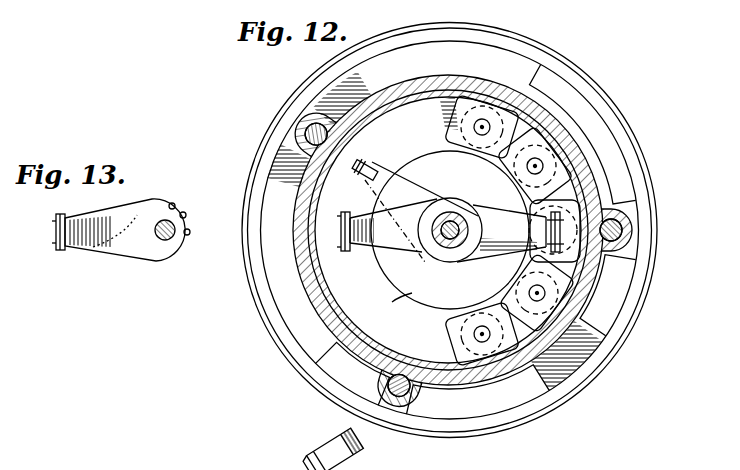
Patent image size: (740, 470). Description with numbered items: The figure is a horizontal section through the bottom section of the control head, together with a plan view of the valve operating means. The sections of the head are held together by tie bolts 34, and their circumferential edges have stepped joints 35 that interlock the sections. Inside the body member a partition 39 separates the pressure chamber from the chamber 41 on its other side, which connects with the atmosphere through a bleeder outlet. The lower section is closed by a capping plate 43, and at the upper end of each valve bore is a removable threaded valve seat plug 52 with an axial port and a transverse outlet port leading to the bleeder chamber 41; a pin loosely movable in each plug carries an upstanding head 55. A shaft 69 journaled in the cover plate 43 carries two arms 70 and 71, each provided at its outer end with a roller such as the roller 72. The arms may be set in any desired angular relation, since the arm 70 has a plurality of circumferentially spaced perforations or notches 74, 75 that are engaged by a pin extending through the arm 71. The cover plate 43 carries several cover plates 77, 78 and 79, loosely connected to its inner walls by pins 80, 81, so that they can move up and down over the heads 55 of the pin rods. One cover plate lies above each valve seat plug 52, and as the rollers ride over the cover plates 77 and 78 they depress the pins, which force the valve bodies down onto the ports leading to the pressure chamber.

In FIG. 12, the tie bolts 34 is at (618, 231).
In FIG. 12, the stepped joints 35 is at (284, 116).
In FIG. 12, the partition 39 is at (441, 172).
In FIG. 12, the chamber 41 is at (400, 297).
In FIG. 12, the capping plate 43 is at (262, 288).
In FIG. 12, the valve seat plug 52 is at (592, 278).
In FIG. 12, the head 55 is at (519, 294).
In FIG. 12, the shaft 69 is at (453, 222).
In FIG. 13, the shaft 69 is at (165, 219).
In FIG. 12, the arm 70 is at (398, 246).
In FIG. 13, the arm 70 is at (132, 247).
In FIG. 12, the arm 71 is at (497, 220).
In FIG. 12, the roller 72 is at (343, 242).
In FIG. 13, the roller 72 is at (60, 244).
In FIG. 13, the perforation or notch 74 is at (175, 203).
In FIG. 13, the perforation or notch 75 is at (187, 214).
In FIG. 12, the cover plate 77 is at (516, 372).
In FIG. 12, the cover plate 78 is at (576, 321).
In FIG. 12, the cover plate 79 is at (566, 212).
In FIG. 12, the pin 80 is at (487, 101).
In FIG. 12, the pin 81 is at (558, 147).